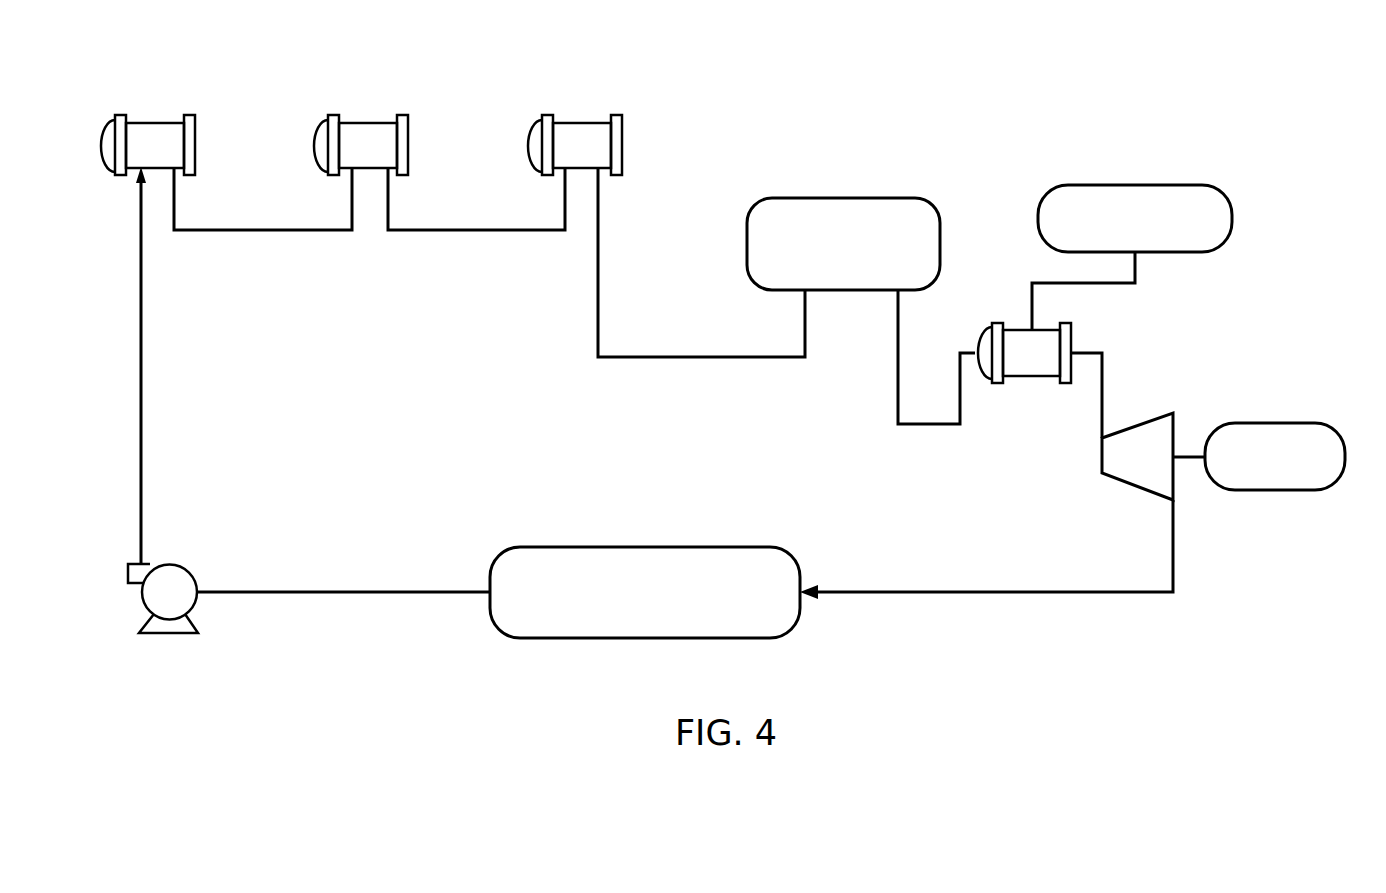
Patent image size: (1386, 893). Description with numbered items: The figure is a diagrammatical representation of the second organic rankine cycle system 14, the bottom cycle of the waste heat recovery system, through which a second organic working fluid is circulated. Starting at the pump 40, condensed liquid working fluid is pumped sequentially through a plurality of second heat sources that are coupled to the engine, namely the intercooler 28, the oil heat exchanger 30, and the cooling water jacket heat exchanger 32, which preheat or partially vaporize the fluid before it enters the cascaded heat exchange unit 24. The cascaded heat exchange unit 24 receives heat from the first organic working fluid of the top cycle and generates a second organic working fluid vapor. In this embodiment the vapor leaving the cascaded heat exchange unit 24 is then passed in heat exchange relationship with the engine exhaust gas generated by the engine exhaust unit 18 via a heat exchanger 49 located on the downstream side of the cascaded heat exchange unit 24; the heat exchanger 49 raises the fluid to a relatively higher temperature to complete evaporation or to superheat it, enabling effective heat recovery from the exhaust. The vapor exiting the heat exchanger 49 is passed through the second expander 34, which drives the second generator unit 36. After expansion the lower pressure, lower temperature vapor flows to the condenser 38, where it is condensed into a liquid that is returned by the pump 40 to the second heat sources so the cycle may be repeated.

The second organic rankine cycle system 14 is at (358, 670).
The first heat source 18 is at (1232, 215).
The cascaded heat exchange unit 24 is at (820, 198).
The intercooler 28 is at (195, 143).
The oil heat exchanger 30 is at (409, 143).
The cooling water jacket heat exchanger 32 is at (533, 143).
The second expander 34 is at (1155, 481).
The second generator unit 36 is at (1275, 423).
The condenser 38 is at (722, 547).
The pump 40 is at (181, 575).
The heat exchanger 49 is at (1040, 374).